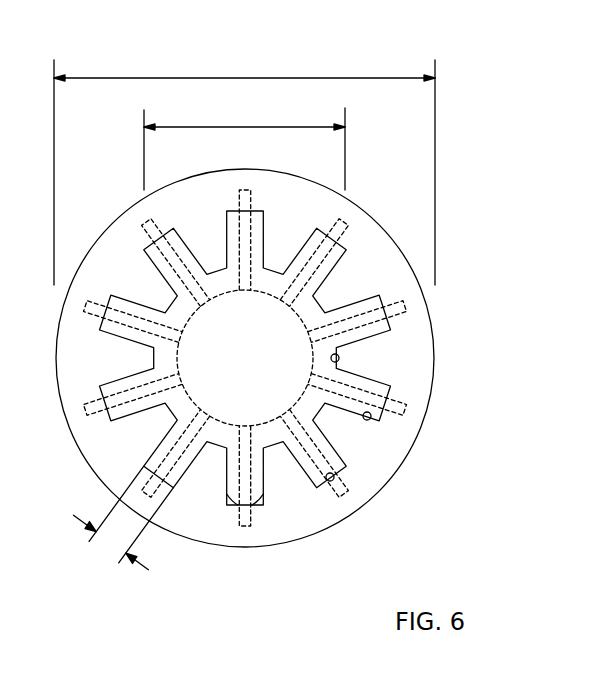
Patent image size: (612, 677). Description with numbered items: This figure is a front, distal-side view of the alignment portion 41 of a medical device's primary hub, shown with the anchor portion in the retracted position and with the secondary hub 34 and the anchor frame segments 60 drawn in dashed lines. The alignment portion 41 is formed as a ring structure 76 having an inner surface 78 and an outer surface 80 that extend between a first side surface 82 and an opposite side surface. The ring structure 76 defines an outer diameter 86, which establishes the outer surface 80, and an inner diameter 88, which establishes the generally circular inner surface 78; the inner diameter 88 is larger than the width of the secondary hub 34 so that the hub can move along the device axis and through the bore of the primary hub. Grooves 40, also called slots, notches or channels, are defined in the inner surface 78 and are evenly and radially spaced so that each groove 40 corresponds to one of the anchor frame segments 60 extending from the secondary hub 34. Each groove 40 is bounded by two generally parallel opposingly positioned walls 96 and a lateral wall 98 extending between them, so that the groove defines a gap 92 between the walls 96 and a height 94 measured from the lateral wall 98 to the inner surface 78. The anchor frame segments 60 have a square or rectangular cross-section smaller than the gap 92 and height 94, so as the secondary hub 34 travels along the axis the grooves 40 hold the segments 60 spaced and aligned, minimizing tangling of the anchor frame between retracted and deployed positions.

The alignment portion 41 is at (283, 273).
The secondary hub 34 is at (287, 343).
The anchor frame segments 60 is at (363, 317).
The ring structure 76 is at (433, 425).
The inner surface 78 is at (262, 358).
The outer surface 80 is at (283, 358).
The first side surface 82 is at (262, 370).
The grooves 40 is at (368, 421).
The lateral wall 98 is at (328, 482).
The opposingly positioned walls 96 is at (253, 506).
The height 94 is at (157, 418).
The gap 92 is at (70, 512).
The outer diameter 86 is at (320, 78).
The inner diameter 88 is at (225, 128).